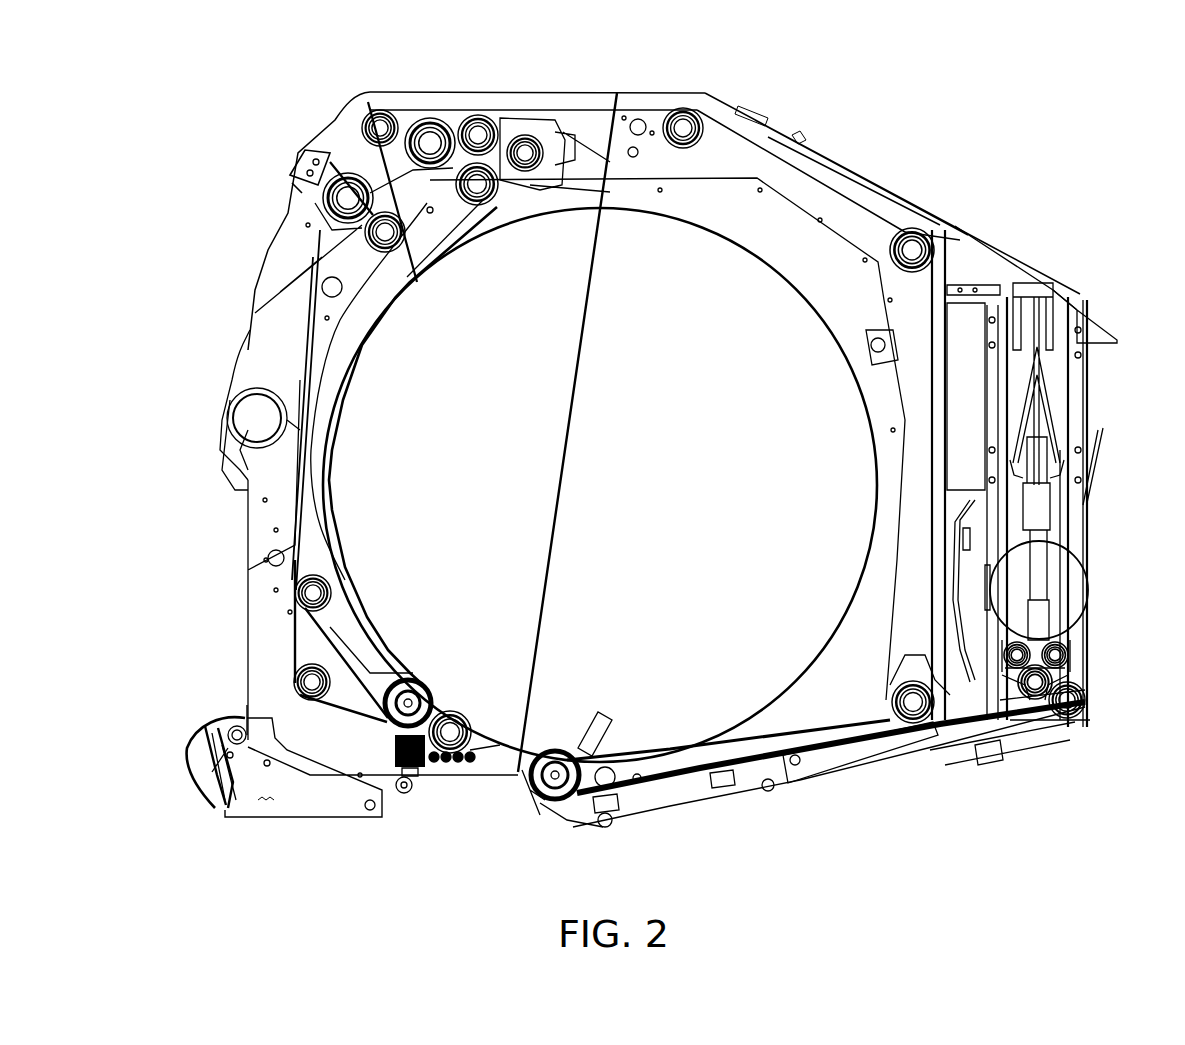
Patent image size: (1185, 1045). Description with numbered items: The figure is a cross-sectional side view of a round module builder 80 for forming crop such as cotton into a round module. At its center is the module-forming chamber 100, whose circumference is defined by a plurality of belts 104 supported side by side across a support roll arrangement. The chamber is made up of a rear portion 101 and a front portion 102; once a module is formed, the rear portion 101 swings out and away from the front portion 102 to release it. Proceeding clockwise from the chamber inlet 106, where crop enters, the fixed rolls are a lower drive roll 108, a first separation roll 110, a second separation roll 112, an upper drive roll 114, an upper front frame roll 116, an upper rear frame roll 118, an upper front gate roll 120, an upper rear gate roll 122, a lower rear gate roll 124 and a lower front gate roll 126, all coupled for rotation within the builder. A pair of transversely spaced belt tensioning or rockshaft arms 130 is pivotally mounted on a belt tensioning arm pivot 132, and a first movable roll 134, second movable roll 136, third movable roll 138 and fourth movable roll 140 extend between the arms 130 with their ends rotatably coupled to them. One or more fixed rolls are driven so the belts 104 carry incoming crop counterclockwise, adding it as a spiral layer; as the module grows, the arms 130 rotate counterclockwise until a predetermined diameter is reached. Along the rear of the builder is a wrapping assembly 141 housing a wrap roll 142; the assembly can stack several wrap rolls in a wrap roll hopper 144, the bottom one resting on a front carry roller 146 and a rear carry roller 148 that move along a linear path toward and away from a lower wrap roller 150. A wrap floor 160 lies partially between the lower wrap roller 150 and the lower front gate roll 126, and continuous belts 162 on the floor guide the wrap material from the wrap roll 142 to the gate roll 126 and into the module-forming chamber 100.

The module builder 80 is at (1072, 116).
The module-forming chamber 100 is at (676, 474).
The rear portion 101 is at (803, 196).
The front portion 102 is at (306, 250).
The belts 104 is at (748, 255).
The chamber inlet 106 is at (490, 790).
The lower drive roll 108 is at (428, 688).
The first separation roll 110 is at (295, 678).
The second separation roll 112 is at (325, 590).
The upper drive roll 114 is at (342, 180).
The upper front frame roll 116 is at (381, 118).
The upper rear frame roll 118 is at (428, 120).
The upper front gate roll 120 is at (690, 115).
The upper rear gate roll 122 is at (915, 240).
The lower rear gate roll 124 is at (910, 722).
The lower front gate roll 126 is at (548, 800).
The belt tensioning arms 130 is at (265, 343).
The belt tensioning arm pivot 132 is at (236, 418).
The first movable roll 134 is at (395, 255).
The second movable roll 136 is at (485, 204).
The third movable roll 138 is at (478, 115).
The fourth movable roll 140 is at (532, 172).
The wrapping assembly 141 is at (1025, 272).
The wrap roll 142 is at (1068, 576).
The wrap roll hopper 144 is at (1100, 425).
The front carry roller 146 is at (1027, 655).
The rear carry roller 148 is at (1068, 658).
The lower wrap roller 150 is at (1080, 716).
The wrap floor 160 is at (740, 818).
The continuous belts 162 is at (1012, 716).